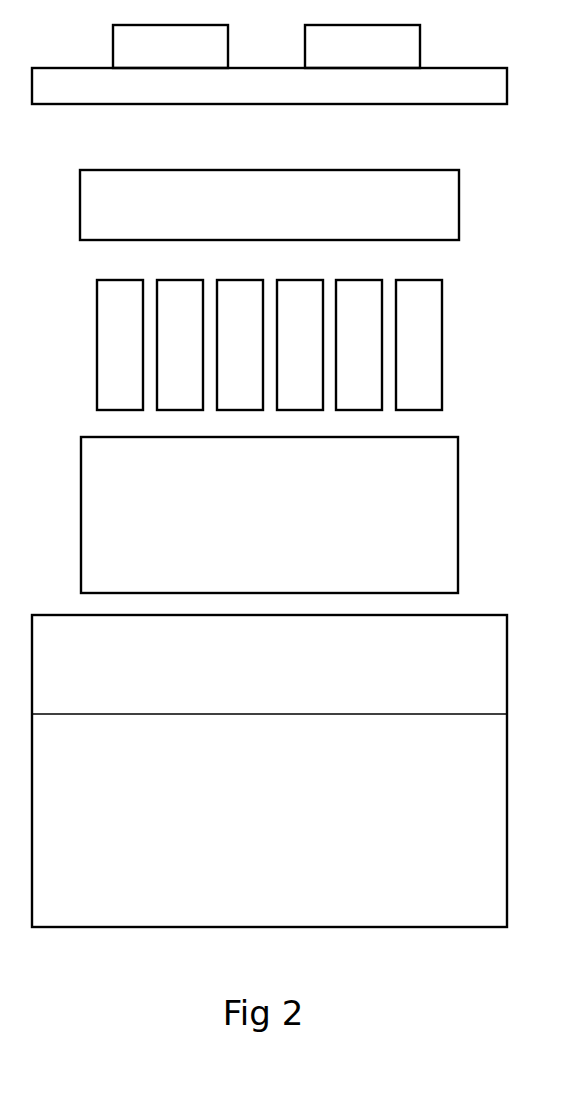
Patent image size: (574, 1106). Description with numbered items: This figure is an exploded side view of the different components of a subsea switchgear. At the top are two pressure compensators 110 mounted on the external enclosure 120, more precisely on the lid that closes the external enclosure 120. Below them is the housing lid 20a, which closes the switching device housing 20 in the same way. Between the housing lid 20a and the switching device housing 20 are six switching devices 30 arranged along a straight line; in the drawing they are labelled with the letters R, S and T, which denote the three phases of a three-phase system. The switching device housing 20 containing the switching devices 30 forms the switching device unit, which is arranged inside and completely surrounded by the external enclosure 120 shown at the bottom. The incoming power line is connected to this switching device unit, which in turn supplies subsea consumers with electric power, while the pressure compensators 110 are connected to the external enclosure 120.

The pressure compensator 110 is at (150, 59).
The external enclosure 120 is at (526, 62).
The housing lid 20a is at (247, 218).
The switching device 30 is at (486, 312).
The switching device housing 20 is at (246, 523).